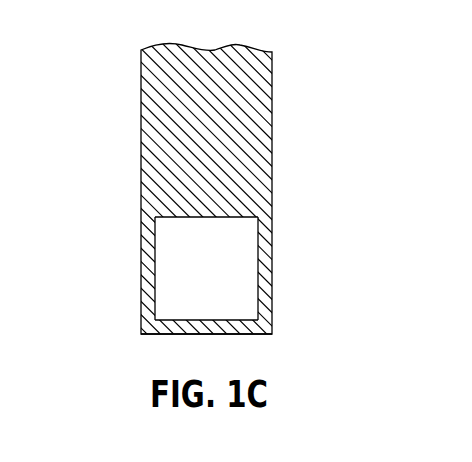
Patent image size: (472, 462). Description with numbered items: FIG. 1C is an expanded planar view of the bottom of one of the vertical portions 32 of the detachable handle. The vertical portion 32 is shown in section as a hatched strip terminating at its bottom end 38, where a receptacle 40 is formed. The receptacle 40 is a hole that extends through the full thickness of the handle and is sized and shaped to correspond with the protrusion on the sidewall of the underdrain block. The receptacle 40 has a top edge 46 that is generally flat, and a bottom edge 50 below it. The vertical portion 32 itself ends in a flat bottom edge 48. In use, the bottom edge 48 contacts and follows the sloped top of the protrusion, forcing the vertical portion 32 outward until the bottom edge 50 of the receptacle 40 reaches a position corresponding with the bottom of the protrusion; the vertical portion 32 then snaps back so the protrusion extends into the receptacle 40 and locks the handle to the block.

The vertical portion 32 is at (117, 133).
The bottom end 38 is at (252, 195).
The receptacle 40 is at (186, 286).
The top edge 46 is at (207, 217).
The bottom edge 48 is at (212, 334).
The bottom edge 50 is at (227, 320).